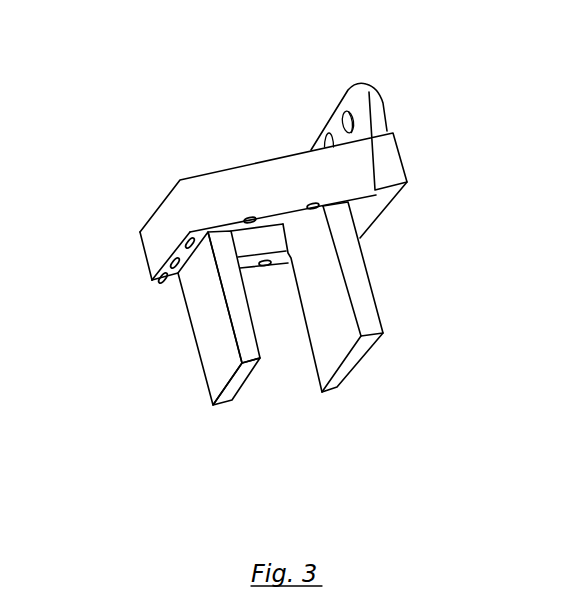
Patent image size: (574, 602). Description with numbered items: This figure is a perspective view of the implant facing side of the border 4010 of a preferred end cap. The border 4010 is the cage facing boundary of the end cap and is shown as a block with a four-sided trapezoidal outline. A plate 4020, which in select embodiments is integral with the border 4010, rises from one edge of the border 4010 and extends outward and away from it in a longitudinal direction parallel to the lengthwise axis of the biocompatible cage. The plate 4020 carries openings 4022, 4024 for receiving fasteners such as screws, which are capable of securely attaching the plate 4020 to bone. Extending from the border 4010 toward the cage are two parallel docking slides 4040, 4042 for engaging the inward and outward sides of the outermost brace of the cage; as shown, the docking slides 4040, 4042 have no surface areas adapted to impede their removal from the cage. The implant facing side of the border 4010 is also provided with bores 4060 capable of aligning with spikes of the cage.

The border 4010 is at (209, 186).
The plate 4020 is at (347, 84).
The opening 4022 is at (435, 93).
The opening 4024 is at (249, 122).
The docking slide 4040 is at (286, 354).
The docking slide 4042 is at (420, 297).
The bores 4060 is at (172, 270).